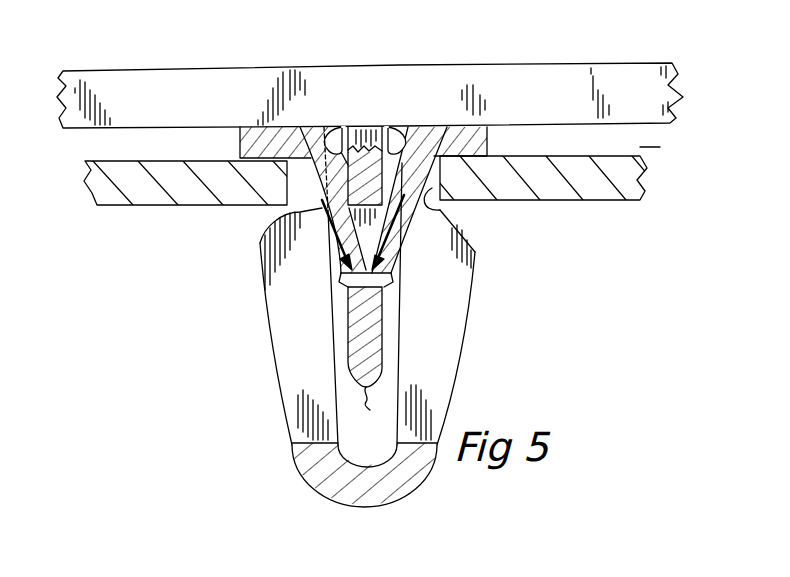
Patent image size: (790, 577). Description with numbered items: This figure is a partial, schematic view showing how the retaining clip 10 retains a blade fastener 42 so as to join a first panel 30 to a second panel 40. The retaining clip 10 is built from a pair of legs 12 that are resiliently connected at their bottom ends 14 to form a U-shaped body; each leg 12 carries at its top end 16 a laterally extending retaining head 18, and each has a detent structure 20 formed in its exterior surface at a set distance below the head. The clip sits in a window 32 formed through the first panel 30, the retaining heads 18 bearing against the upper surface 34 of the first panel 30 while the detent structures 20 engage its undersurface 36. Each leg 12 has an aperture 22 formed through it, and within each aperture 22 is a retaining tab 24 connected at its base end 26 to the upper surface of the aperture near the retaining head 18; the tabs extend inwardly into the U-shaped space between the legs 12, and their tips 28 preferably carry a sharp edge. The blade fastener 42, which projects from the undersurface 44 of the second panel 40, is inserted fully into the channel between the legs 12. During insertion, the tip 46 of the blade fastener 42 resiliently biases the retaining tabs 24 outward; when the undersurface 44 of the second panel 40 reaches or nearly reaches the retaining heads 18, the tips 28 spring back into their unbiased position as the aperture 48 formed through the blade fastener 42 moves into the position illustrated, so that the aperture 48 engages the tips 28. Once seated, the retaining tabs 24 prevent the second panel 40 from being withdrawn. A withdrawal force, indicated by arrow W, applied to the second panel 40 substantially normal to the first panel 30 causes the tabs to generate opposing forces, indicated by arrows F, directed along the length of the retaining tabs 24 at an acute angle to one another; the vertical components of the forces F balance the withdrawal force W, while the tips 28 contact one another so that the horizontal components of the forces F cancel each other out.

The retaining clip 10 is at (134, 338).
The legs 12 is at (232, 428).
The bottom ends 14 is at (366, 508).
The top end 16 is at (286, 163).
The retaining head 18 is at (240, 140).
The detent structure 20 is at (204, 258).
The aperture 22 is at (460, 410).
The retaining tab 24 is at (298, 218).
The base end 26 is at (332, 130).
The tips 28 is at (341, 287).
The first panel 30 is at (118, 222).
The window 32 is at (440, 203).
The upper surface 34 is at (646, 134).
The undersurface 36 is at (636, 203).
The second panel 40 is at (133, 58).
The blade fastener 42 is at (414, 349).
The undersurface 44 is at (93, 128).
The tip 46 is at (364, 412).
The aperture 48 is at (341, 283).
The withdrawal force W is at (366, 55).
The opposing forces F is at (422, 239).